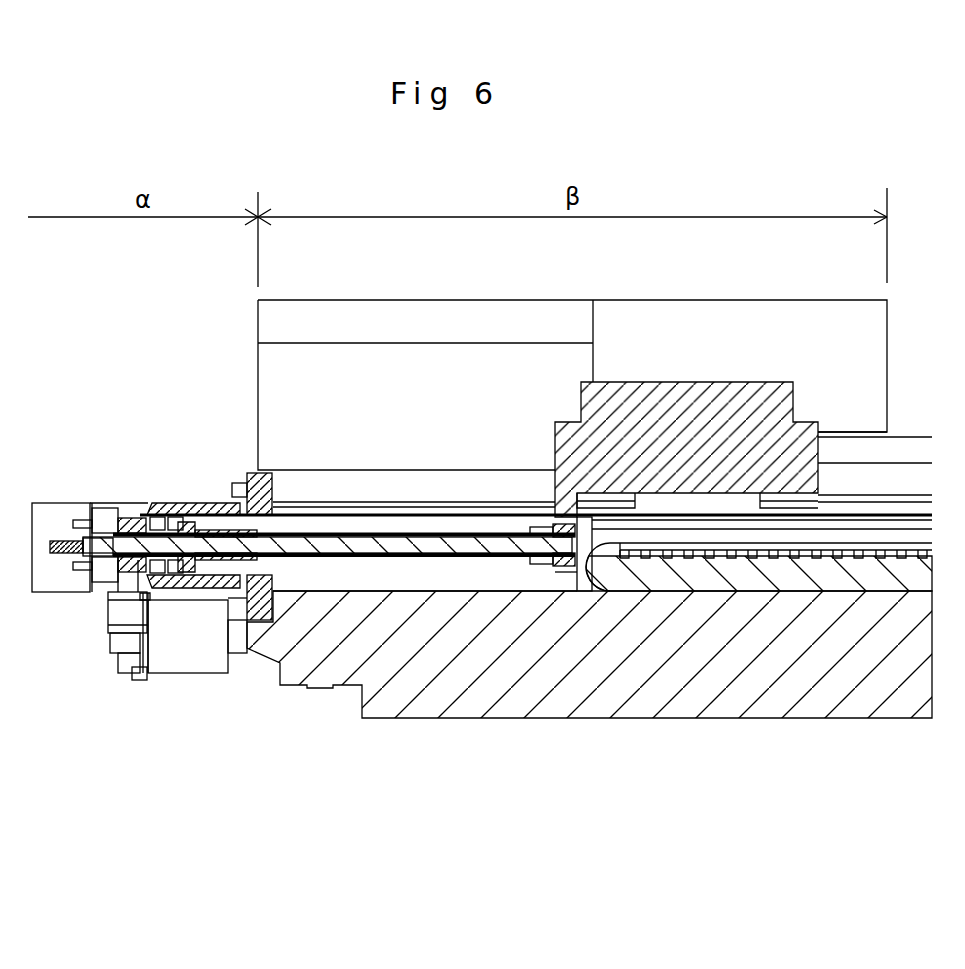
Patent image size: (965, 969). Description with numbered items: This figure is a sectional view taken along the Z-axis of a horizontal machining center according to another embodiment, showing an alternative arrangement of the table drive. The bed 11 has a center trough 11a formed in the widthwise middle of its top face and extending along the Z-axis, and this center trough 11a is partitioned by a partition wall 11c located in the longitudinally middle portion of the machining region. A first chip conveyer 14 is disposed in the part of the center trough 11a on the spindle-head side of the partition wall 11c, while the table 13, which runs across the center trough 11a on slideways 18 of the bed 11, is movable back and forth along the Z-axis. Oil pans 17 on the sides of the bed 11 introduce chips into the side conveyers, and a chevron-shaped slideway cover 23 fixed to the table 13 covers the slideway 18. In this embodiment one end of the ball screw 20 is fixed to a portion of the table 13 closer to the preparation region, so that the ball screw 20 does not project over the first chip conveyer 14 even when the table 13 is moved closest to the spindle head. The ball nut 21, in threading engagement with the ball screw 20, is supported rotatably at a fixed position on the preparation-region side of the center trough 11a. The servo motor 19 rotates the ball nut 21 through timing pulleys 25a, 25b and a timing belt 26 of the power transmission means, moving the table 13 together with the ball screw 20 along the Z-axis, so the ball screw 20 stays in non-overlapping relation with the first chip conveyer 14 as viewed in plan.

The bed 11 is at (728, 703).
The center trough 11a is at (463, 577).
The partition wall 11c is at (578, 593).
The table 13 is at (693, 397).
The first chip conveyer 14 is at (833, 573).
The oil pan 17 is at (712, 293).
The slideway 18 is at (477, 507).
The servo motor 19 is at (193, 662).
The ball screw 20 is at (395, 545).
The ball nut 21 is at (210, 528).
The slideway cover 23 is at (845, 443).
The timing pulley 25a is at (128, 523).
The timing pulley 25b is at (132, 657).
The timing belt 26 is at (128, 610).